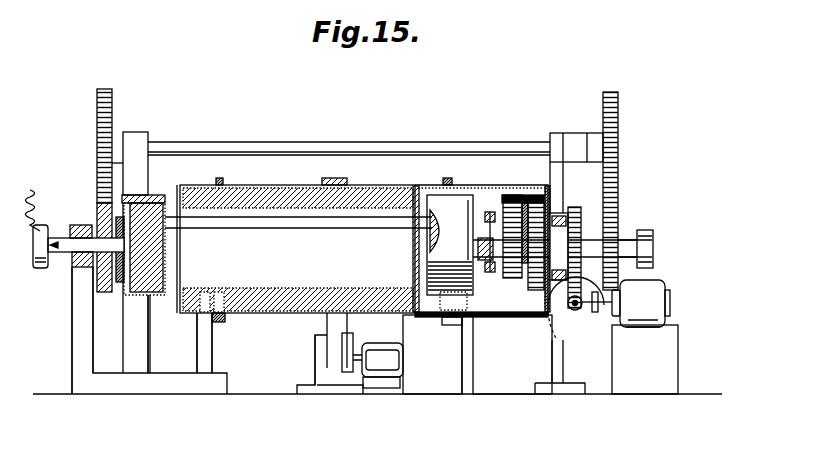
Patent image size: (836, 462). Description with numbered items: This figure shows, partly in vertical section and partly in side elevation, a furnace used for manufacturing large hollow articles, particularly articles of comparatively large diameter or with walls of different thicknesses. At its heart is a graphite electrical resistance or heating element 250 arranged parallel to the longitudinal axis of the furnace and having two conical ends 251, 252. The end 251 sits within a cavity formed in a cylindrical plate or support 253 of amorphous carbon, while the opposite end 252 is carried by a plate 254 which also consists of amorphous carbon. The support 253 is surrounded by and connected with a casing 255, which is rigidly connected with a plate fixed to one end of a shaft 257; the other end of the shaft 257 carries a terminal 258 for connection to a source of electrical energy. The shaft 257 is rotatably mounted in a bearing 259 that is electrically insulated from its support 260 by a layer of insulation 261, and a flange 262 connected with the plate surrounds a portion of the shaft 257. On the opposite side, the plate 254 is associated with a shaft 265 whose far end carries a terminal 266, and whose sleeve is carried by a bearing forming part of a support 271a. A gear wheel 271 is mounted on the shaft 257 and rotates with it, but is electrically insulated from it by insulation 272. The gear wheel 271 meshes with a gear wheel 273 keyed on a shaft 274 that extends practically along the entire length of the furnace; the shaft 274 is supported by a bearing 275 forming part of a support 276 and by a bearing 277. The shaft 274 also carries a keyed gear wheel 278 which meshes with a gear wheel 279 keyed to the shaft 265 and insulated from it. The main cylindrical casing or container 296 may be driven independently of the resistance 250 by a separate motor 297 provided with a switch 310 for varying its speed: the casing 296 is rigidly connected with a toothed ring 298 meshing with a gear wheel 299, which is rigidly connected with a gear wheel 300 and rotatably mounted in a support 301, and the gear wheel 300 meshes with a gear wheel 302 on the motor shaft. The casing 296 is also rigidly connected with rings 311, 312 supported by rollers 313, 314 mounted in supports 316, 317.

The electrical resistance or heating element 250 is at (140, 295).
The conical end 251 is at (168, 227).
The conical end 252 is at (428, 241).
The cylindrical plate or support 253 is at (158, 297).
The plate 254 is at (436, 218).
The casing 255 is at (122, 320).
The shaft 257 is at (66, 268).
The terminal 258 is at (54, 225).
The bearing 259 is at (83, 225).
The support 260 is at (80, 334).
The layer of insulation 261 is at (85, 268).
The flange 262 is at (150, 240).
The shaft 265 is at (624, 243).
The terminal 266 is at (653, 246).
The gear wheel 271 is at (146, 196).
The support 271a is at (558, 357).
The insulation 272 is at (95, 282).
The gear wheel 273 is at (97, 108).
The shaft 274 is at (307, 143).
The bearing 275 is at (148, 134).
The support 276 is at (143, 361).
The bearing 277 is at (556, 132).
The gear wheel 278 is at (618, 105).
The gear wheel 279 is at (585, 230).
The main cylindrical casing or container 296 is at (395, 185).
The motor 297 is at (450, 325).
The toothed ring 298 is at (345, 181).
The gear wheel 299 is at (337, 362).
The gear wheel 300 is at (354, 348).
The support 301 is at (317, 348).
The gear wheel 302 is at (354, 372).
The switch 310 is at (386, 365).
The ring 311 is at (221, 178).
The ring 312 is at (444, 178).
The roller 313 is at (225, 326).
The roller 314 is at (441, 354).
The support 316 is at (207, 359).
The support 317 is at (468, 377).